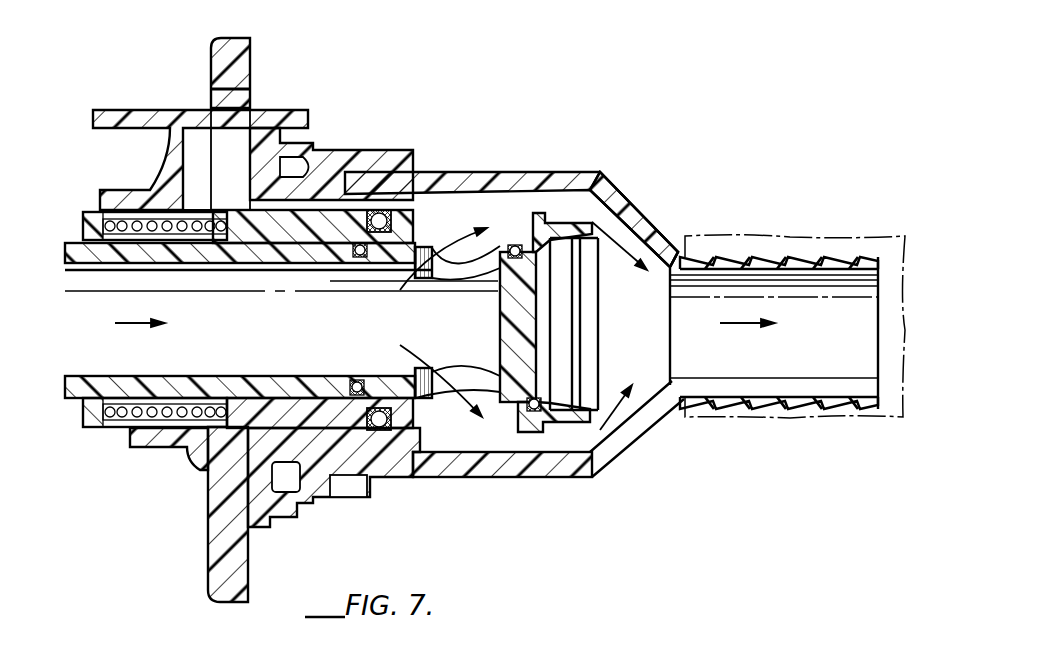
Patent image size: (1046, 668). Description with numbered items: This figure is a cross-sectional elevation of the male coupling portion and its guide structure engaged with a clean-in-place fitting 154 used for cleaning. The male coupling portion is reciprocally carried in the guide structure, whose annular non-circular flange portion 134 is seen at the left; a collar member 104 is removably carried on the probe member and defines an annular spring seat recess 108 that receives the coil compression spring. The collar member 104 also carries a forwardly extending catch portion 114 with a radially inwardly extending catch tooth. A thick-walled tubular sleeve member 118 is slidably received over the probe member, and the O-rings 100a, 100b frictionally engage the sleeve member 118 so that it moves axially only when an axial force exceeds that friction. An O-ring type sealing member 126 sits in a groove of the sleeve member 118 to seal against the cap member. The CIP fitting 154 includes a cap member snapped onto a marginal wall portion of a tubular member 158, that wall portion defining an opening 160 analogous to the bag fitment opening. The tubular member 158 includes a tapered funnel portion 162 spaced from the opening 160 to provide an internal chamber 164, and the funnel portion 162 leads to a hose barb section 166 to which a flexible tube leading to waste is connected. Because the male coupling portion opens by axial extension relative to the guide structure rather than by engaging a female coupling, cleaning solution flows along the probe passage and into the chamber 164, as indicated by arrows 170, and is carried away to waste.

The O-ring 100a is at (513, 402).
The O-ring 100b is at (357, 385).
The collar member 104 is at (117, 428).
The annular spring seat recess 108 is at (780, 418).
The catch portion 114 is at (306, 112).
The tubular sleeve member 118 is at (208, 470).
The O-ring type sealing member 126 is at (410, 218).
The annular non-circular flange portion 134 is at (213, 580).
The clean-in-place (CIP) fitting 154 is at (589, 168).
The tubular member 158 is at (494, 168).
The opening 160 is at (360, 190).
The tapered funnel portion 162 is at (643, 217).
The internal chamber 164 is at (648, 334).
The hose barb section 166 is at (800, 260).
The arrows 170 is at (402, 345).